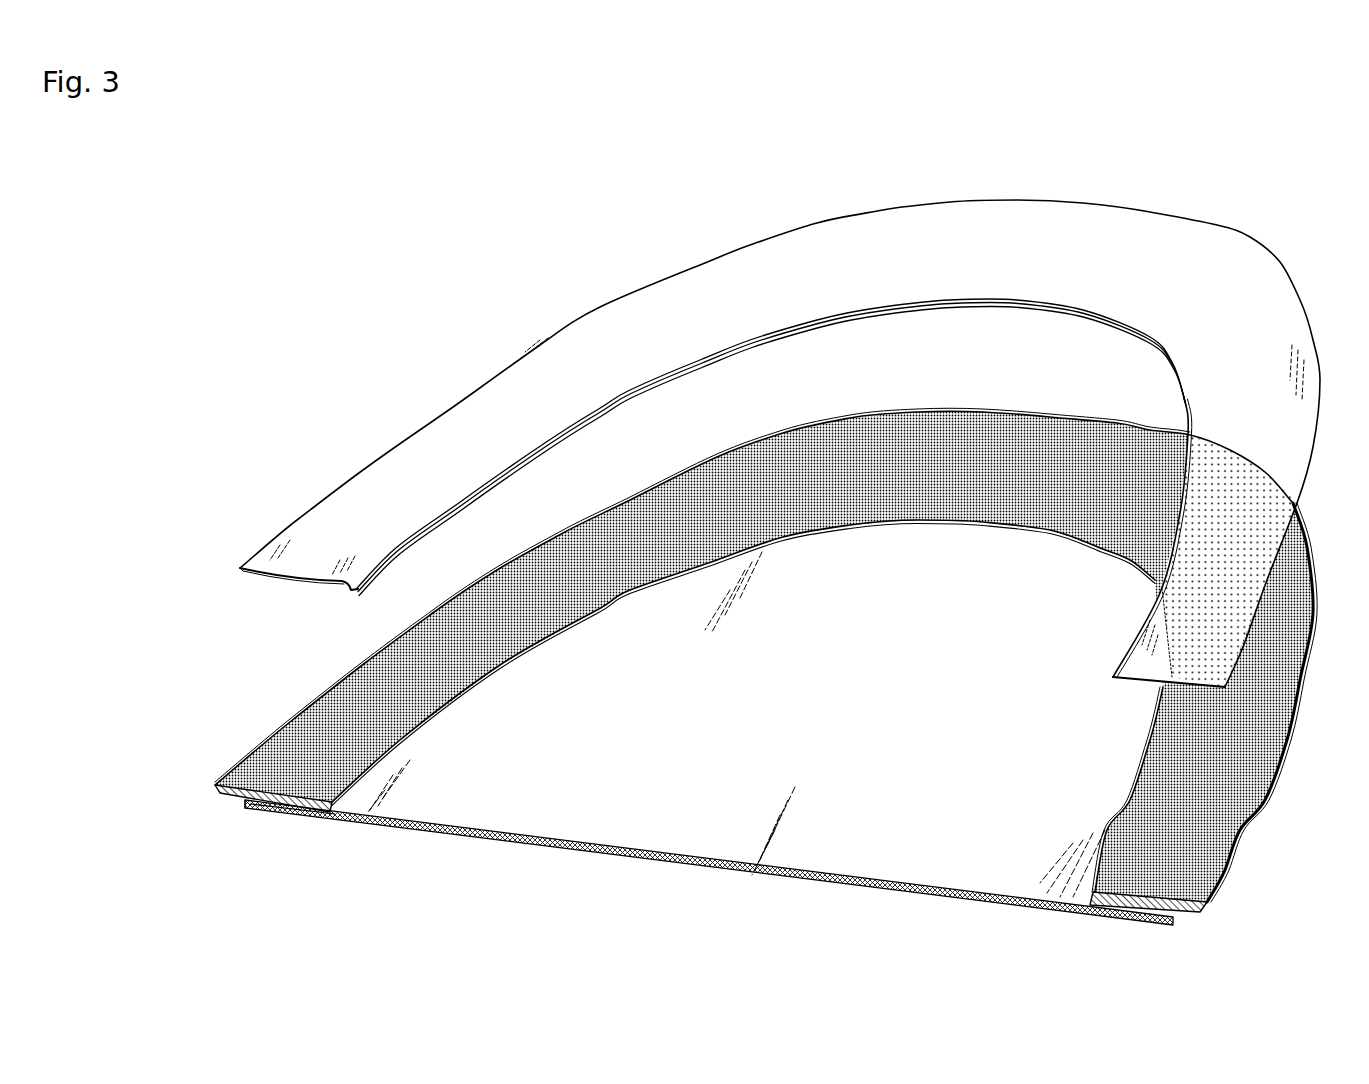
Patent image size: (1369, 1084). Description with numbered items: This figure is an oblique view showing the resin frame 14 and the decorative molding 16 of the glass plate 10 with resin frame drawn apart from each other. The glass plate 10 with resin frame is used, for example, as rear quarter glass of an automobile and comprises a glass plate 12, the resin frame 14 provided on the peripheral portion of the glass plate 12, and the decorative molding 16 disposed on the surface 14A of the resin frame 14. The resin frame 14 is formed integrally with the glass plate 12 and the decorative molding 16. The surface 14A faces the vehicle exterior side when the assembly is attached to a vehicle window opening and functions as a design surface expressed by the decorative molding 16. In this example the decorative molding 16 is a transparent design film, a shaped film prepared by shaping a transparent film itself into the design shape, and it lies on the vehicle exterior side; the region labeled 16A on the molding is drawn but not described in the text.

The glass plate with resin frame 10 is at (363, 318).
The glass plate 12 is at (884, 852).
The resin frame 14 is at (1310, 522).
The surface of the resin frame 14A is at (1231, 745).
The decorative molding 16 is at (1198, 208).
The outer surface of cover member 16A is at (1077, 242).